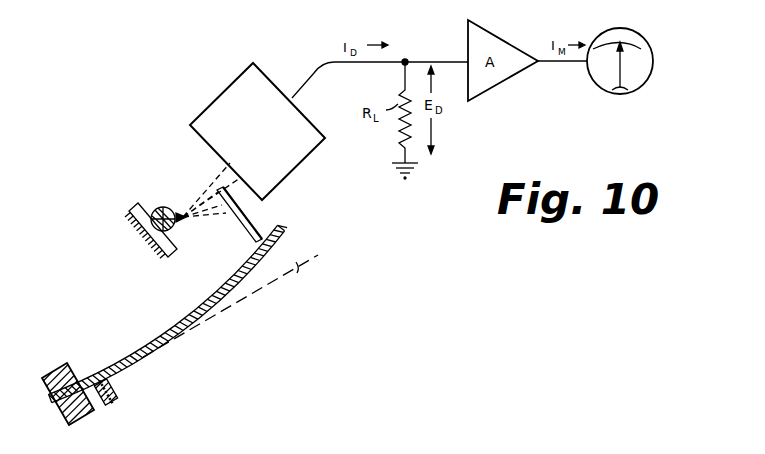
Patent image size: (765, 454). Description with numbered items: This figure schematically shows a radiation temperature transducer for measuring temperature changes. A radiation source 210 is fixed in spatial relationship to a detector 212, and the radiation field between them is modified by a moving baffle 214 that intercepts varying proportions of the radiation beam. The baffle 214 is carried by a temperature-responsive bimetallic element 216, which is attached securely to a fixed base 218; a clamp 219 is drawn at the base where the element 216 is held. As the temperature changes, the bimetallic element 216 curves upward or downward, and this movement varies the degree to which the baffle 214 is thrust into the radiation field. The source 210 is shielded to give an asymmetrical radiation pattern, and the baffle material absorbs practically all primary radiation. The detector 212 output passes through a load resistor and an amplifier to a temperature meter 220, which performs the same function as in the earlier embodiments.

The radiation source 210 is at (157, 207).
The detector 212 is at (254, 150).
The moving baffle 214 is at (240, 229).
The bimetallic element 216 is at (166, 328).
The fixed base 218 is at (47, 385).
The clamp 219 is at (108, 405).
The temperature meter 220 is at (653, 68).